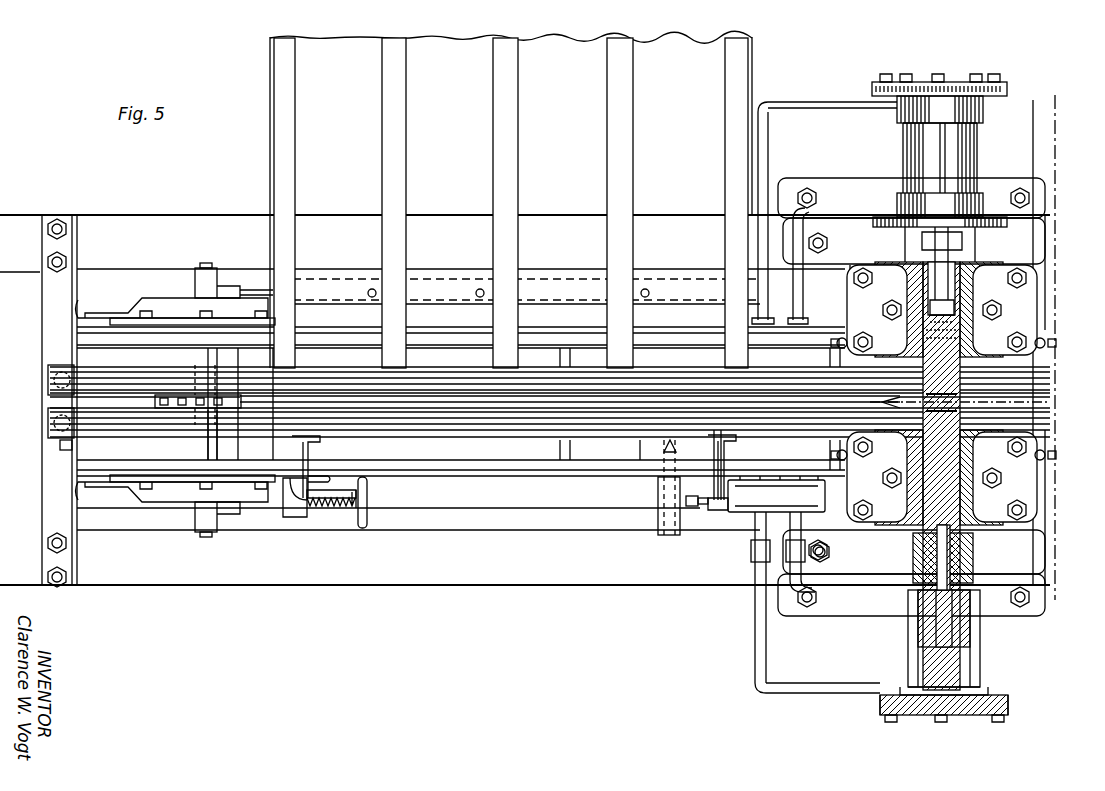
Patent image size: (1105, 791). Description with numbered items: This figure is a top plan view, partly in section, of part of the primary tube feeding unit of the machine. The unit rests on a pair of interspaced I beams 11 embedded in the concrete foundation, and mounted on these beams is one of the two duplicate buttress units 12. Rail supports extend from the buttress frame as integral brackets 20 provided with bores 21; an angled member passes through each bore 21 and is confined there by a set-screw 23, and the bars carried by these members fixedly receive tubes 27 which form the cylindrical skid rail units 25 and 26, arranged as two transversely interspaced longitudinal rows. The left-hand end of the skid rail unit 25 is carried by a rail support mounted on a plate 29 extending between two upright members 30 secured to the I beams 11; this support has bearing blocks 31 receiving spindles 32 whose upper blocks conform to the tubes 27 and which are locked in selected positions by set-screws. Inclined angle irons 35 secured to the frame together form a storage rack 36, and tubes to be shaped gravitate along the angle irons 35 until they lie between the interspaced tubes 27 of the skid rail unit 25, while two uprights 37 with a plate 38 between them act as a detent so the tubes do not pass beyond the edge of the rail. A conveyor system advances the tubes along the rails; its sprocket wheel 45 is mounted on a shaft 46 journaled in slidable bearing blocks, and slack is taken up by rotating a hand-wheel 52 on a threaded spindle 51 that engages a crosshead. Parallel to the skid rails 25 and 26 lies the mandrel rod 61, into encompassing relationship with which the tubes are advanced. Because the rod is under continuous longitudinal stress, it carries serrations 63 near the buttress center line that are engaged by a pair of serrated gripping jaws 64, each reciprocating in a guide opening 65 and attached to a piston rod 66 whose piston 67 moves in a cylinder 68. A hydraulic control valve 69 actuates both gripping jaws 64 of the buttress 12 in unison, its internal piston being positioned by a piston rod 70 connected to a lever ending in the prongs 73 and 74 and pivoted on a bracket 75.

The I beams 11 is at (145, 222).
The buttress unit 12 is at (960, 746).
The bracket 20 is at (845, 337).
The bore 21 is at (845, 340).
The set-screw 23 is at (1056, 342).
The skid rail unit 25 is at (510, 385).
The skid rail unit 26 is at (1052, 371).
The tube 27 is at (350, 356).
The plate 29 is at (60, 446).
The upright member 30 is at (78, 305).
The bearing block 31 is at (46, 372).
The spindle 32 is at (46, 400).
The inclined angle iron 35 is at (381, 164).
The storage rack 36 is at (511, 75).
The upright 37 is at (312, 445).
The plate 38 is at (548, 440).
The sprocket wheel 45 is at (176, 395).
The shaft 46 is at (205, 446).
The threaded spindle 51 is at (328, 510).
The hand-wheel 52 is at (367, 500).
The mandrel rod 61 is at (1052, 398).
The serrations 63 is at (962, 462).
The gripping jaw 64 is at (930, 326).
The guide opening 65 is at (955, 326).
The piston rod 66 is at (955, 551).
The piston 67 is at (975, 628).
The cylinder 68 is at (980, 152).
The hydraulic control valve 69 is at (804, 584).
The piston rod 70 is at (700, 506).
The prong 73 is at (678, 450).
The prong 74 is at (662, 445).
The bracket 75 is at (660, 497).